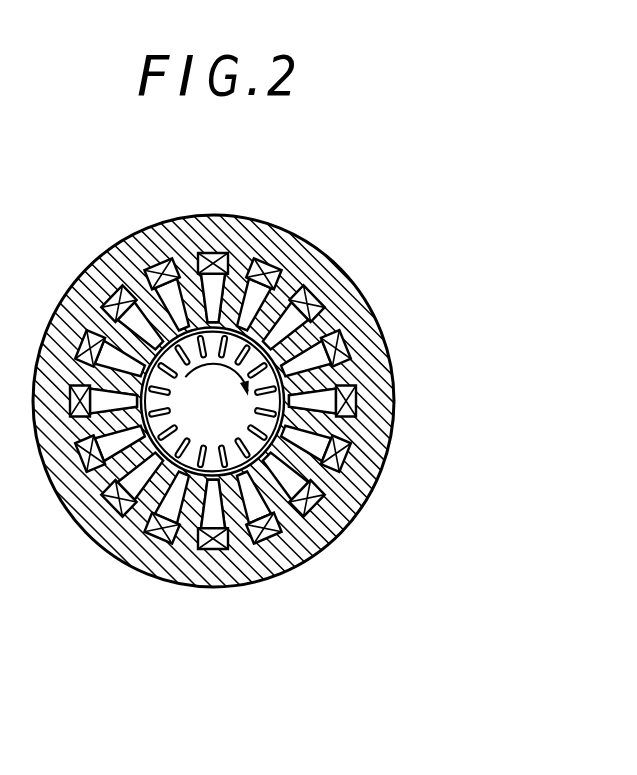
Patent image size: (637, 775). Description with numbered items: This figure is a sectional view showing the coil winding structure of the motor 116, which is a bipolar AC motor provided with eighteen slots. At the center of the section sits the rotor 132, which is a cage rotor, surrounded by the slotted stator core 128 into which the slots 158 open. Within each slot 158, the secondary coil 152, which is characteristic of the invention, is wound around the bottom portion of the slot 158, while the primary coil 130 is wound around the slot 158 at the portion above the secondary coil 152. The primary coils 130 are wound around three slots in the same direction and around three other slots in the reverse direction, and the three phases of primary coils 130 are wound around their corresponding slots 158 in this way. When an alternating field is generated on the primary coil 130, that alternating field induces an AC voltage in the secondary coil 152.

The motor 116 is at (124, 584).
The stator core 128 is at (372, 376).
The primary coil 130 is at (238, 260).
The rotor 132 is at (229, 420).
The secondary coil 152 is at (207, 256).
The slot 158 is at (302, 302).